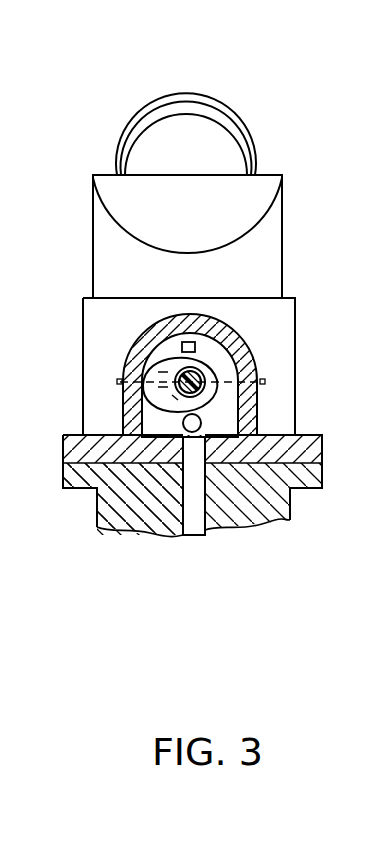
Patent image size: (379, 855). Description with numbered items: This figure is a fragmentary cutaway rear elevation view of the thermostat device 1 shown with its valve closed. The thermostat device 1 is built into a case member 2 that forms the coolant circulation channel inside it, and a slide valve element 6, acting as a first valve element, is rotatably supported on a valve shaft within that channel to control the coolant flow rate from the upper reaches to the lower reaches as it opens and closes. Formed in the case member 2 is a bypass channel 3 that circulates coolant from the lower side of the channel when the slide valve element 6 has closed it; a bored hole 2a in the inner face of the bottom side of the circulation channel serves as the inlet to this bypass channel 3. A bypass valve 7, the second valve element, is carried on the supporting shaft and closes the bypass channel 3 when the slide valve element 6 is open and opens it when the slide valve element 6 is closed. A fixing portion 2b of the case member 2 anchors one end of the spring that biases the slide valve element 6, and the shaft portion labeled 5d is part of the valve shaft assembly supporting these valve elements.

The thermostat device 1 is at (322, 108).
The case member 2 is at (267, 247).
The bored hole 2a is at (181, 426).
The fixing portion 2b is at (176, 323).
The bypass channel 3 is at (192, 513).
The mounting arch portion 5d is at (243, 368).
The slide valve element 6 is at (118, 382).
The bypass valve 7 is at (205, 365).